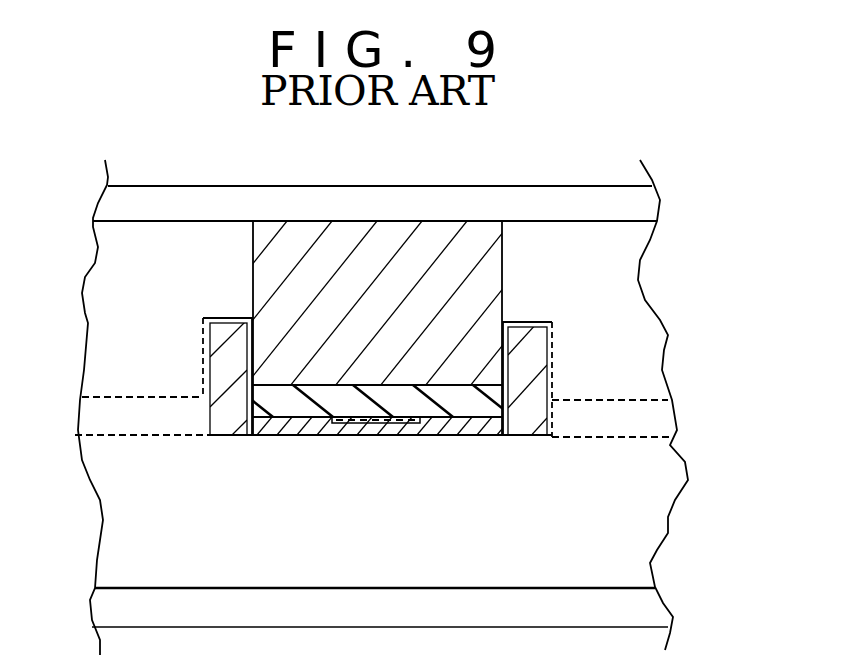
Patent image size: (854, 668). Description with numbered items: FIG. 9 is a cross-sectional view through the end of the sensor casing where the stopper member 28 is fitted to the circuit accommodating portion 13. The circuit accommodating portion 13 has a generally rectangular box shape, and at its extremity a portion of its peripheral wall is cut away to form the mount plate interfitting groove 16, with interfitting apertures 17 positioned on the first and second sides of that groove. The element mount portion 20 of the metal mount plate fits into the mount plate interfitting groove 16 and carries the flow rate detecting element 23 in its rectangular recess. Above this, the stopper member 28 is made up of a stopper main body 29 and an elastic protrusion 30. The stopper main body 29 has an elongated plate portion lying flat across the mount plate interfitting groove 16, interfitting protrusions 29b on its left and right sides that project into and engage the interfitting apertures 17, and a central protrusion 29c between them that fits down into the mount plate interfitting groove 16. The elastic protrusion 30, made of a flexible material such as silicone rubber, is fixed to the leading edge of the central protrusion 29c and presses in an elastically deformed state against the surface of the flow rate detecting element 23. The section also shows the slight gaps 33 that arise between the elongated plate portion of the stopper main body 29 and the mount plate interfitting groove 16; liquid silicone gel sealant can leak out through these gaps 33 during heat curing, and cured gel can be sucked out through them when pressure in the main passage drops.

The circuit accommodating portion 13 is at (658, 537).
The stopper member 28 is at (655, 236).
The stopper main body 29 is at (650, 272).
The central protrusion 29c is at (411, 262).
The interfitting protrusions 29b is at (112, 362).
The interfitting apertures 17 is at (98, 416).
The elastic protrusion 30 is at (272, 432).
The element mount portion 20 is at (305, 433).
The flow rate detecting element 23 is at (383, 424).
The gaps 33 is at (520, 437).
The mount plate interfitting groove 16 is at (505, 335).